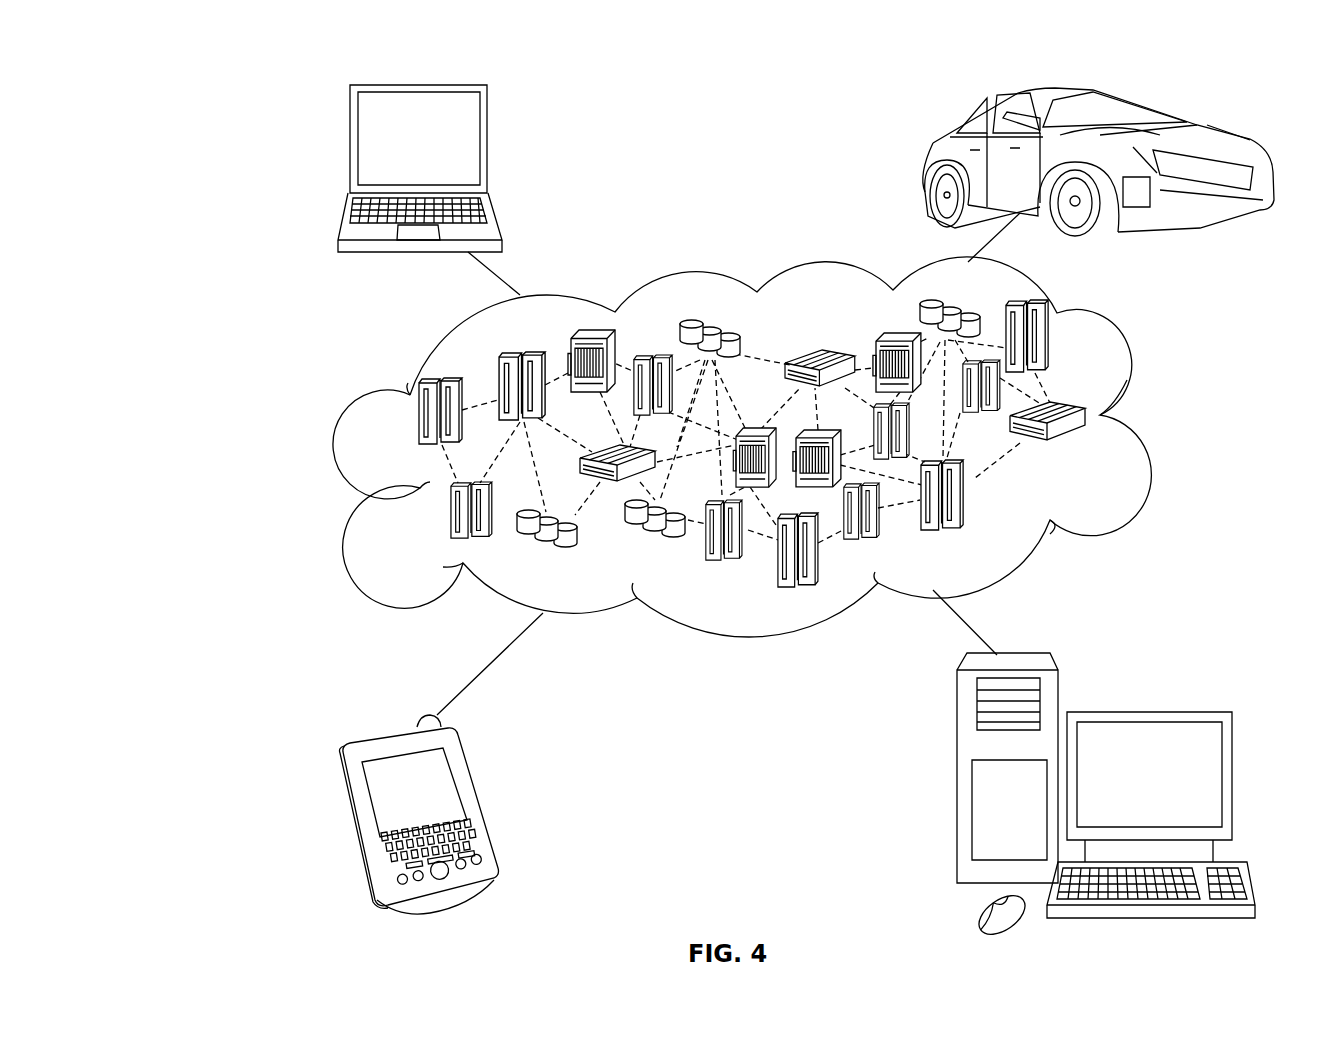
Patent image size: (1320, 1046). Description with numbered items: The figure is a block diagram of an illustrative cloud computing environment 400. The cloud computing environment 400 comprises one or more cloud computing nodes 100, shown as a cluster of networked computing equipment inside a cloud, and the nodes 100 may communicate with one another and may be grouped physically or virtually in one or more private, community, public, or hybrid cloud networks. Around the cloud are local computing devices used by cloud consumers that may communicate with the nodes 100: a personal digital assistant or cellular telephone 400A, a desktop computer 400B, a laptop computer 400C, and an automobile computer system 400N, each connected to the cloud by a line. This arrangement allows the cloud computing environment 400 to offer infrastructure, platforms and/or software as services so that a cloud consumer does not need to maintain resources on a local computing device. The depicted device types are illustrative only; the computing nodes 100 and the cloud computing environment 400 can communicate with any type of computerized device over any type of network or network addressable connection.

The cloud computing environment 400 is at (228, 88).
The cloud computing nodes 100 is at (1088, 452).
The personal digital assistant (PDA) or cellular telephone 400A is at (482, 800).
The desktop computer 400B is at (1147, 710).
The laptop computer 400C is at (490, 148).
The automobile computer system 400N is at (927, 160).